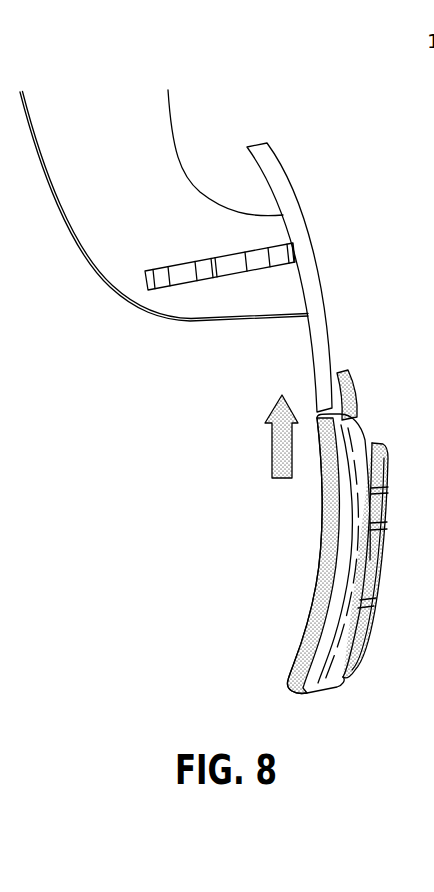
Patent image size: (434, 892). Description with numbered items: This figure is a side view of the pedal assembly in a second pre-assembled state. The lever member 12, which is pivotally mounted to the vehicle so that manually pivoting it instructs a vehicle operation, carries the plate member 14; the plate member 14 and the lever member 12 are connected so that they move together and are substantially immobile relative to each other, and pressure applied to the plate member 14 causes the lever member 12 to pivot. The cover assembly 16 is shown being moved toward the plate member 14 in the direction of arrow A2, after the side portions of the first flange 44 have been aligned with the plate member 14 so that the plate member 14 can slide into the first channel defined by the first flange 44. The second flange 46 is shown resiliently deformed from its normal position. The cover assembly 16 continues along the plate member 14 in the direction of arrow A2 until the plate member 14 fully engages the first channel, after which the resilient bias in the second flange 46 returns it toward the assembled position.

The lever member 12 is at (84, 262).
The plate member 14 is at (283, 167).
The cover assembly 16 is at (324, 531).
The first flange 44 is at (312, 615).
The second flange 46 is at (357, 378).
The arrow A2 is at (268, 463).